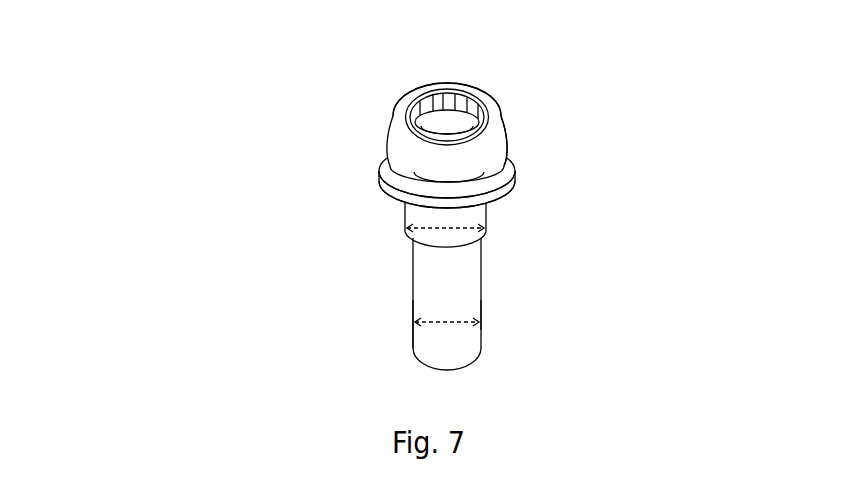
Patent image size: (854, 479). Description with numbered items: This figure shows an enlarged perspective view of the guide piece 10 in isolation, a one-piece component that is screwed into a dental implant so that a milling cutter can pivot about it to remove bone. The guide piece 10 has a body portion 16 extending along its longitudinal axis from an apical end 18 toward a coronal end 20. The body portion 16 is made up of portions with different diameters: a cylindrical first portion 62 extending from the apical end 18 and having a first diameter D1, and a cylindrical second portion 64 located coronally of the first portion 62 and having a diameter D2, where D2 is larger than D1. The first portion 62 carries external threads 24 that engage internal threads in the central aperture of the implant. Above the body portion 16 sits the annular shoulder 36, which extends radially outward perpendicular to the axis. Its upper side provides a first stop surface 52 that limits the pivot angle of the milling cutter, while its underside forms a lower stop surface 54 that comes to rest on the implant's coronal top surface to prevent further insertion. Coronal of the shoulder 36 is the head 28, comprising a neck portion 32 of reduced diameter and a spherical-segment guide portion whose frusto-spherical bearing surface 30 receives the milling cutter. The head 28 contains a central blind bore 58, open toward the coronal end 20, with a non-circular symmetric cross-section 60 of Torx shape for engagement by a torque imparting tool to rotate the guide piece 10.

The guide piece 10 is at (152, 128).
The body portion 16 is at (453, 308).
The apical end 18 is at (467, 367).
The coronal end 20 is at (467, 89).
The external threads 24 is at (413, 325).
The head 28 is at (512, 126).
The frusto-spherical bearing surface 30 is at (403, 142).
The neck portion 32 is at (427, 178).
The annular shoulder 36 is at (512, 177).
The first stop surface 52 is at (395, 162).
The lower stop surface 54 is at (400, 197).
The central blind bore 58 is at (462, 120).
The non-circular symmetric cross-section 60 is at (425, 89).
The cylindrical first portion 62 is at (415, 297).
The cylindrical second portion 64 is at (407, 223).
The first diameter D1 is at (470, 323).
The second diameter D2 is at (450, 228).